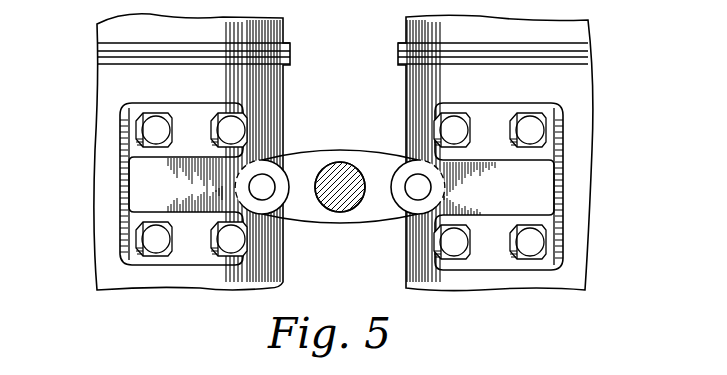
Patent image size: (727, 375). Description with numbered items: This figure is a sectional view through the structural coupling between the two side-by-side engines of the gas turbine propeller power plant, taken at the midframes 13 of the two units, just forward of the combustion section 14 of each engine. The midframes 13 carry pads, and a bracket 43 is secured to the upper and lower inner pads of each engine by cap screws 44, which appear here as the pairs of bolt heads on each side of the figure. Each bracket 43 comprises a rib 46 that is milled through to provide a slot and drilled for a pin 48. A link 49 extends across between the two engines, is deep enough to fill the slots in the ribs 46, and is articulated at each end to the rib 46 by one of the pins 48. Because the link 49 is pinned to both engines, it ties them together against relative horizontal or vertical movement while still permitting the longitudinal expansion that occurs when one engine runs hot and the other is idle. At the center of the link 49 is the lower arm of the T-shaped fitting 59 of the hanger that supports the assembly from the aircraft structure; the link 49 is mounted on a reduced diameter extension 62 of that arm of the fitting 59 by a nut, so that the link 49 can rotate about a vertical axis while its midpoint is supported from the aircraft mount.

The midframe 13 is at (108, 90).
The combustion section 14 is at (108, 33).
The bracket 43 is at (188, 120).
The cap screws 44 is at (210, 242).
The rib 46 is at (143, 185).
The pin 48 is at (268, 187).
The link 49 is at (314, 210).
The T-shaped fitting 59 is at (354, 208).
The reduced diameter extension 62 is at (344, 180).